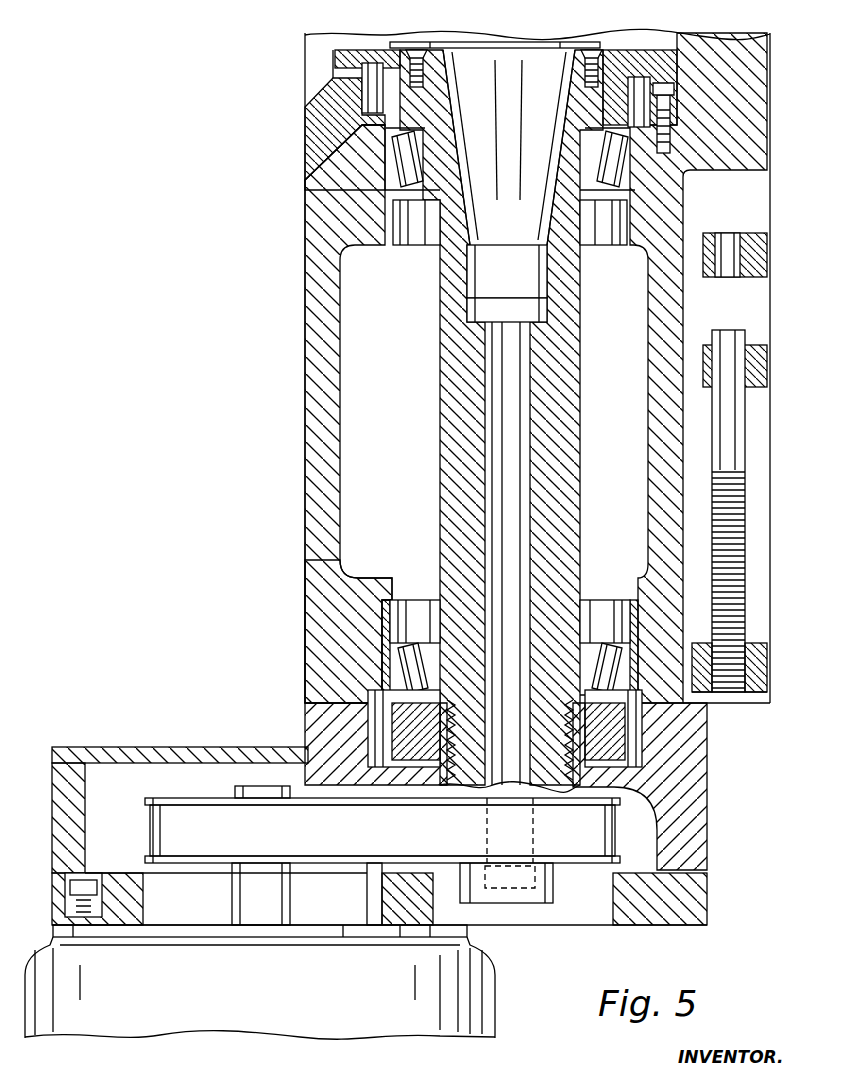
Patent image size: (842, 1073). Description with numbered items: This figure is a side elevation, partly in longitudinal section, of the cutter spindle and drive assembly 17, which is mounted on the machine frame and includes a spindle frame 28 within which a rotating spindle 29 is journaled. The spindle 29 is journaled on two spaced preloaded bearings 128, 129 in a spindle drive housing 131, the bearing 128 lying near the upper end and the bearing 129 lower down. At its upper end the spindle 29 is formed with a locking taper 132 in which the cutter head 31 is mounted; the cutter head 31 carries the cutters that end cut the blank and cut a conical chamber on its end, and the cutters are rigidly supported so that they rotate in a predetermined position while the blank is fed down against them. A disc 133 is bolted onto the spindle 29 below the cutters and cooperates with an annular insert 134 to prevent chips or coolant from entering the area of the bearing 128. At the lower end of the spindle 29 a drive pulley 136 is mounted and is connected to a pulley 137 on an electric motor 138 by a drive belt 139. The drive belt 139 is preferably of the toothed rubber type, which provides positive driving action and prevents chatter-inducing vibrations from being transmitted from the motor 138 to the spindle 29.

The cutter spindle and drive assembly 17 is at (303, 451).
The spindle frame 28 is at (305, 232).
The rotating spindle 29 is at (440, 418).
The cutter head 31 is at (542, 38).
The preloaded bearing 128 is at (412, 200).
The preloaded bearing 129 is at (387, 645).
The spindle drive housing 131 is at (317, 584).
The locking taper 132 is at (450, 124).
The disc 133 is at (625, 46).
The annular insert 134 is at (340, 98).
The drive pulley 136 is at (585, 865).
The pulley 137 is at (185, 798).
The electric motor 138 is at (293, 1037).
The drive belt 139 is at (388, 862).